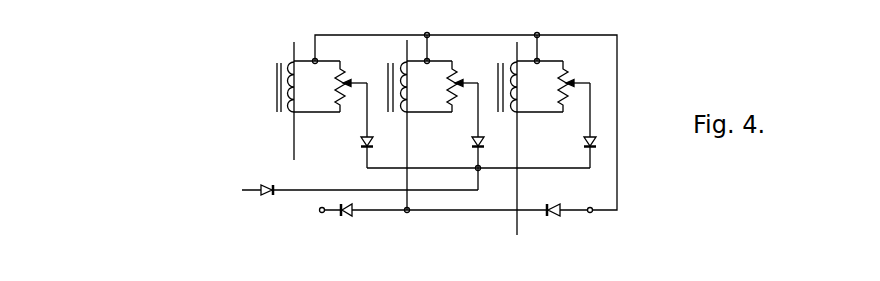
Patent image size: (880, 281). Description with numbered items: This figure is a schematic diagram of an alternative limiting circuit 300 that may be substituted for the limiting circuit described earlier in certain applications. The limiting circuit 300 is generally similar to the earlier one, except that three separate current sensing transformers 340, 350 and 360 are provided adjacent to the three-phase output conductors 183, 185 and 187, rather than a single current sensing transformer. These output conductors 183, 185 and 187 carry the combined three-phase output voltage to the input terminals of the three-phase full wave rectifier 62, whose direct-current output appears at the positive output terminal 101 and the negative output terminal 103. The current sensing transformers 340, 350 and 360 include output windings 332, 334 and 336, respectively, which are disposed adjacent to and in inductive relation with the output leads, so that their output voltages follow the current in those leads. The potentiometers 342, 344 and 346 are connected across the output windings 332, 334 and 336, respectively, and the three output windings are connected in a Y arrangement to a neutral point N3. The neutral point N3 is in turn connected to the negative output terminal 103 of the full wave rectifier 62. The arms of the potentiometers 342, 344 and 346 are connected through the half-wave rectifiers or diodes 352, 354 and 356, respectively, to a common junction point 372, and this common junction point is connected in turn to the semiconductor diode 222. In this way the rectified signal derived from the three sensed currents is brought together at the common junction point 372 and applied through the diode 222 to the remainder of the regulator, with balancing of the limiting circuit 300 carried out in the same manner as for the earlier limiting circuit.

The neutral point N3 is at (375, 35).
The alternative limiting circuit 300 is at (254, 111).
The current sensing transformer 340 is at (280, 60).
The current sensing transformer 350 is at (385, 60).
The current sensing transformer 360 is at (500, 60).
The output winding 332 is at (288, 108).
The output winding 334 is at (400, 108).
The output winding 336 is at (511, 108).
The potentiometer 342 is at (337, 98).
The potentiometer 344 is at (449, 98).
The potentiometer 346 is at (565, 72).
The half-wave rectifier or diode 352 is at (362, 147).
The half-wave rectifier or diode 354 is at (475, 147).
The half-wave rectifier or diode 356 is at (588, 147).
The output conductor 183 is at (294, 152).
The output conductor 185 is at (407, 160).
The output conductor 187 is at (519, 146).
The common junction point 372 is at (476, 171).
The semiconductor diode 222 is at (260, 190).
The three-phase full wave rectifier 62 is at (458, 235).
The positive output terminal 101 is at (321, 213).
The negative output terminal 103 is at (592, 213).